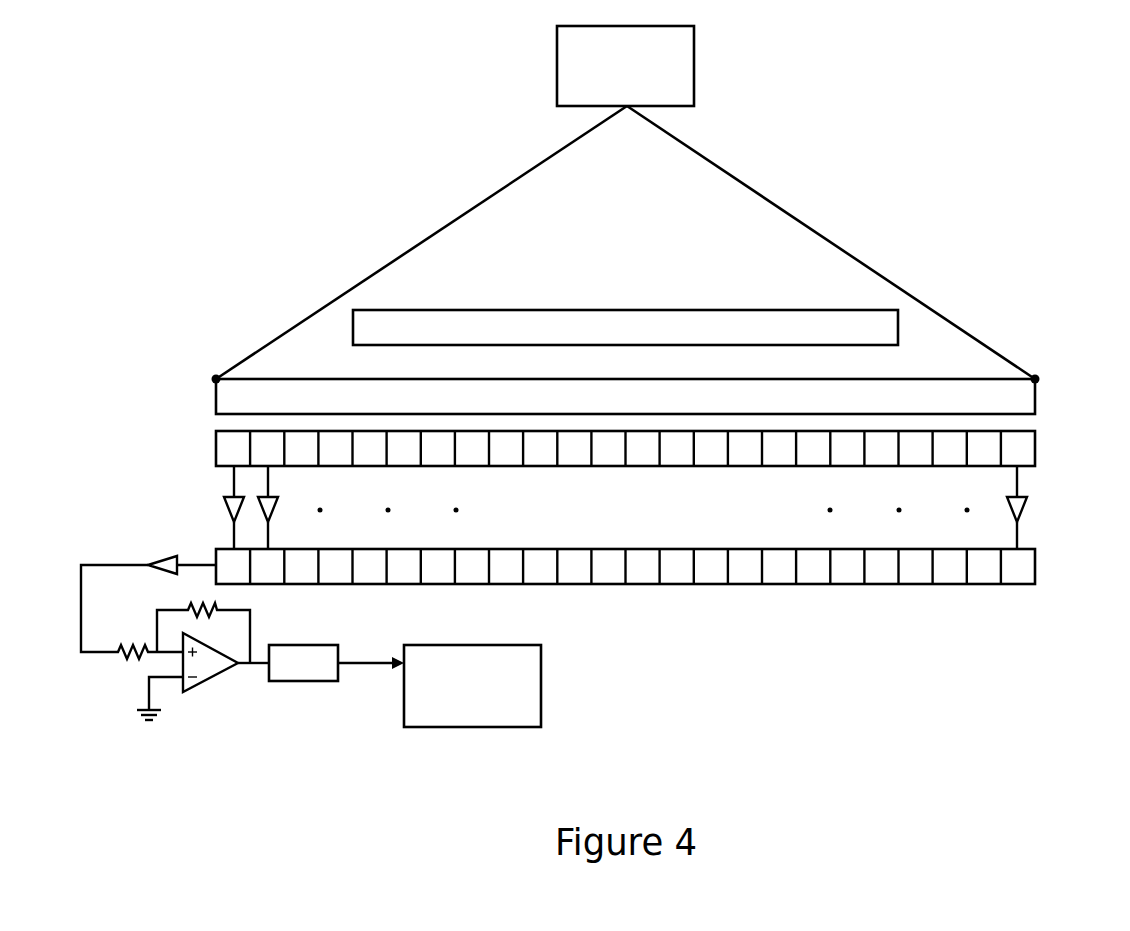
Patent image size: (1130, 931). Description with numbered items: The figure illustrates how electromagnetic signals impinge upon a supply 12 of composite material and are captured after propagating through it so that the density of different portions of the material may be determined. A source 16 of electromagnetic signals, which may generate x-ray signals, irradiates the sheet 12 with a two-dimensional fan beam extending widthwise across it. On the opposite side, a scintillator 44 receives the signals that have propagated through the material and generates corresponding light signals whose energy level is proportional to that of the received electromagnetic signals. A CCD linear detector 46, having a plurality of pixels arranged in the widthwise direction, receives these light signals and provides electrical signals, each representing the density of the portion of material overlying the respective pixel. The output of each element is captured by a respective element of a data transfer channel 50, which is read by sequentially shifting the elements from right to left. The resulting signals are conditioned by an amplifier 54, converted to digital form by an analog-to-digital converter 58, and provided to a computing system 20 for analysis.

The source of electromagnetic signals 16 is at (666, 60).
The supply of composite material 12 is at (625, 300).
The scintillator 44 is at (664, 378).
The CCD linear detector 46 is at (666, 429).
The data transfer channel 50 is at (666, 550).
The amplifier 54 is at (221, 696).
The analog-to-digital converter (ADC) 58 is at (336, 692).
The computing system 20 is at (513, 678).